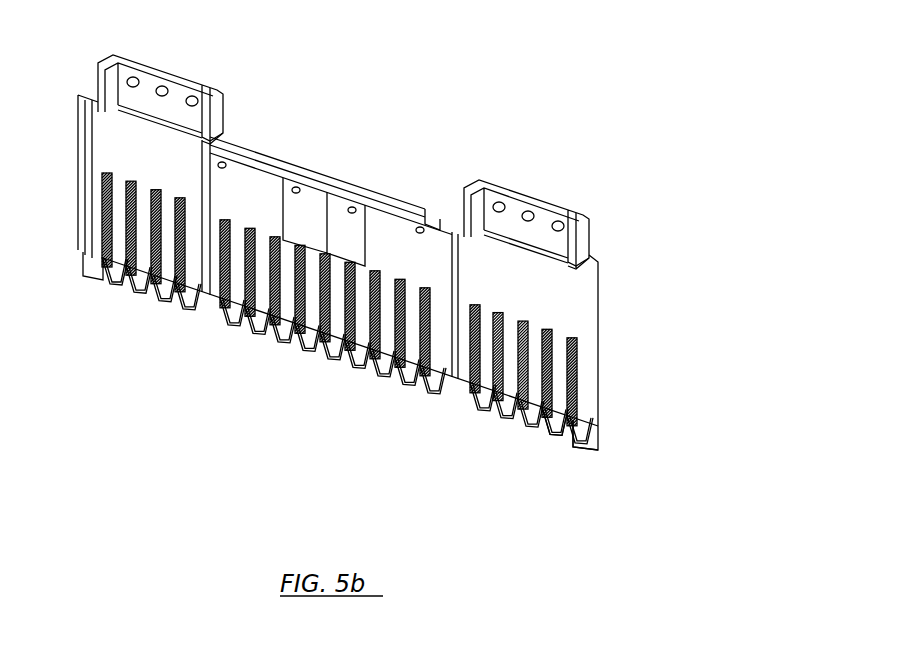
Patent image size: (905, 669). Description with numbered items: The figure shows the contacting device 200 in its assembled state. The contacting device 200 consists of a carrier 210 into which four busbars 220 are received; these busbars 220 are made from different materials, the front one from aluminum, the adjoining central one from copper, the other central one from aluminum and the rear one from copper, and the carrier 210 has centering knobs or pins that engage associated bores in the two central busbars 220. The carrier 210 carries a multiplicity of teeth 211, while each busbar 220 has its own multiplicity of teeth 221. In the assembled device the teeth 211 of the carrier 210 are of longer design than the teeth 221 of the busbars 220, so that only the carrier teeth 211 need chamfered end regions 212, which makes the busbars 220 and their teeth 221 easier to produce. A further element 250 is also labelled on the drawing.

The contacting device 200 is at (136, 382).
The carrier 210 is at (430, 190).
The teeth of the carrier 211 is at (567, 410).
The chamfered end regions 212 is at (558, 427).
The busbar 220 is at (485, 288).
The teeth of the busbars 221 is at (560, 363).
The tab / mounting plate 250 is at (330, 230).